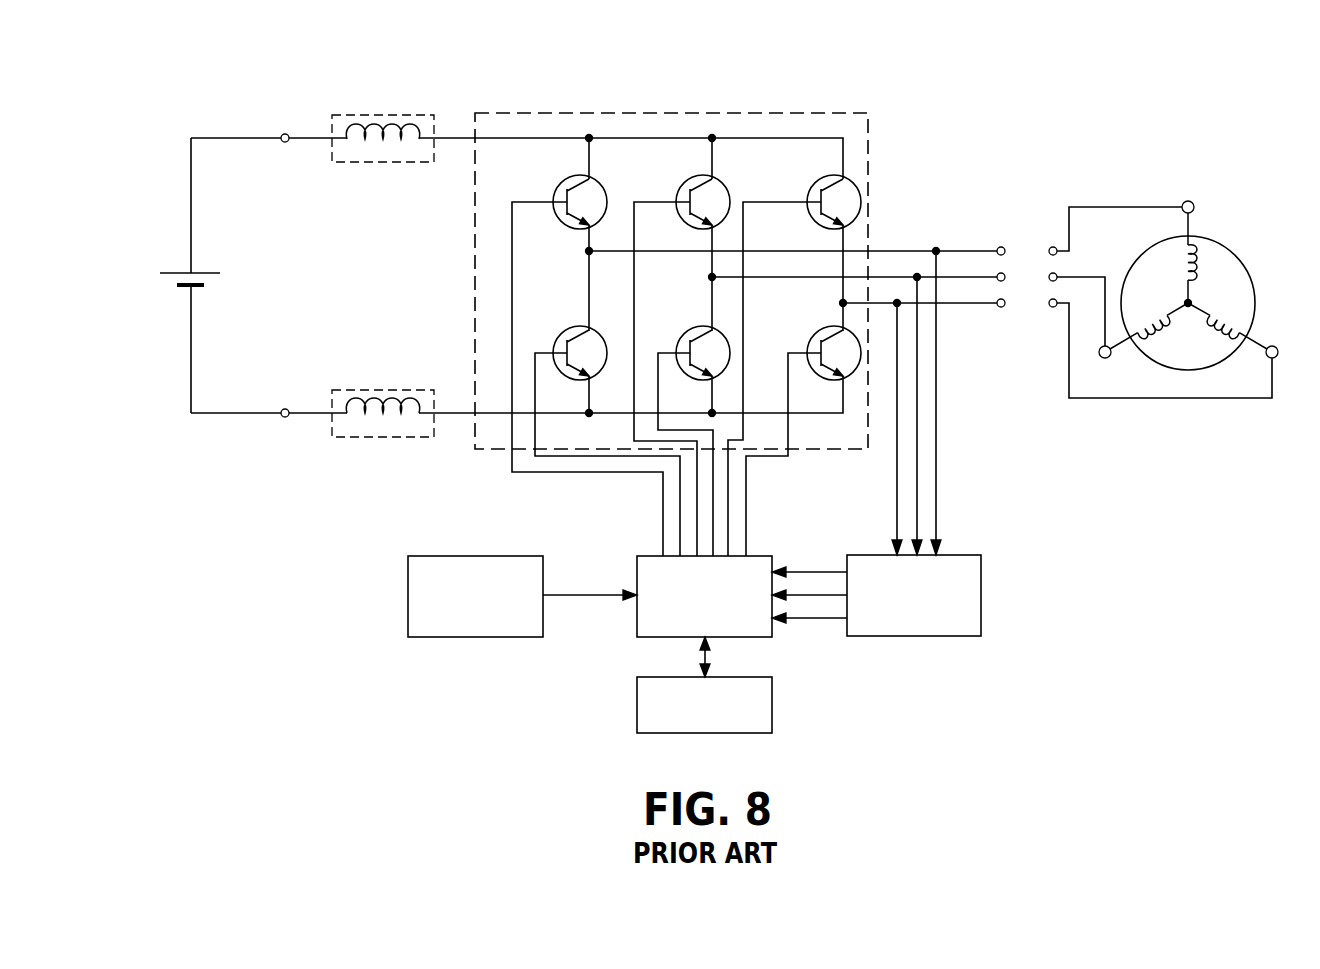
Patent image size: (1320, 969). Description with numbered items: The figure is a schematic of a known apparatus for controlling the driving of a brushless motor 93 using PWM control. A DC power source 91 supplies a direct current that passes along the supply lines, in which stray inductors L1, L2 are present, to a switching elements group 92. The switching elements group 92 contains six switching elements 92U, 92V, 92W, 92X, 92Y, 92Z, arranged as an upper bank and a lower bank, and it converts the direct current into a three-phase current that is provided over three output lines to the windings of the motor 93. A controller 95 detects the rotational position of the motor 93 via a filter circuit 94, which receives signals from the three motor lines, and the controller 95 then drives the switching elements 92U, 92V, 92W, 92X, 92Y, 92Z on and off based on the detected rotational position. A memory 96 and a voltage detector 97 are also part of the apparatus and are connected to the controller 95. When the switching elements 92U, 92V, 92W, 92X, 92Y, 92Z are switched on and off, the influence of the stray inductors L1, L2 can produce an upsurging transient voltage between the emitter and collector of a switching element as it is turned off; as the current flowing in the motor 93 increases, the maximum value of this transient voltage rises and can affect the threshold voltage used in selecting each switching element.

The DC power source 91 is at (168, 274).
The switching elements group 92 is at (668, 113).
The switching element 92U is at (566, 196).
The switching element 92V is at (689, 197).
The switching element 92W is at (820, 196).
The switching element 92X is at (565, 345).
The switching element 92Y is at (688, 344).
The switching element 92Z is at (820, 344).
The brushless motor 93 is at (1207, 368).
The filter circuit 94 is at (935, 637).
The controller 95 is at (637, 566).
The memory 96 is at (708, 733).
The voltage detector 97 is at (435, 637).
The stray inductor L1 is at (382, 114).
The stray inductor L2 is at (365, 437).